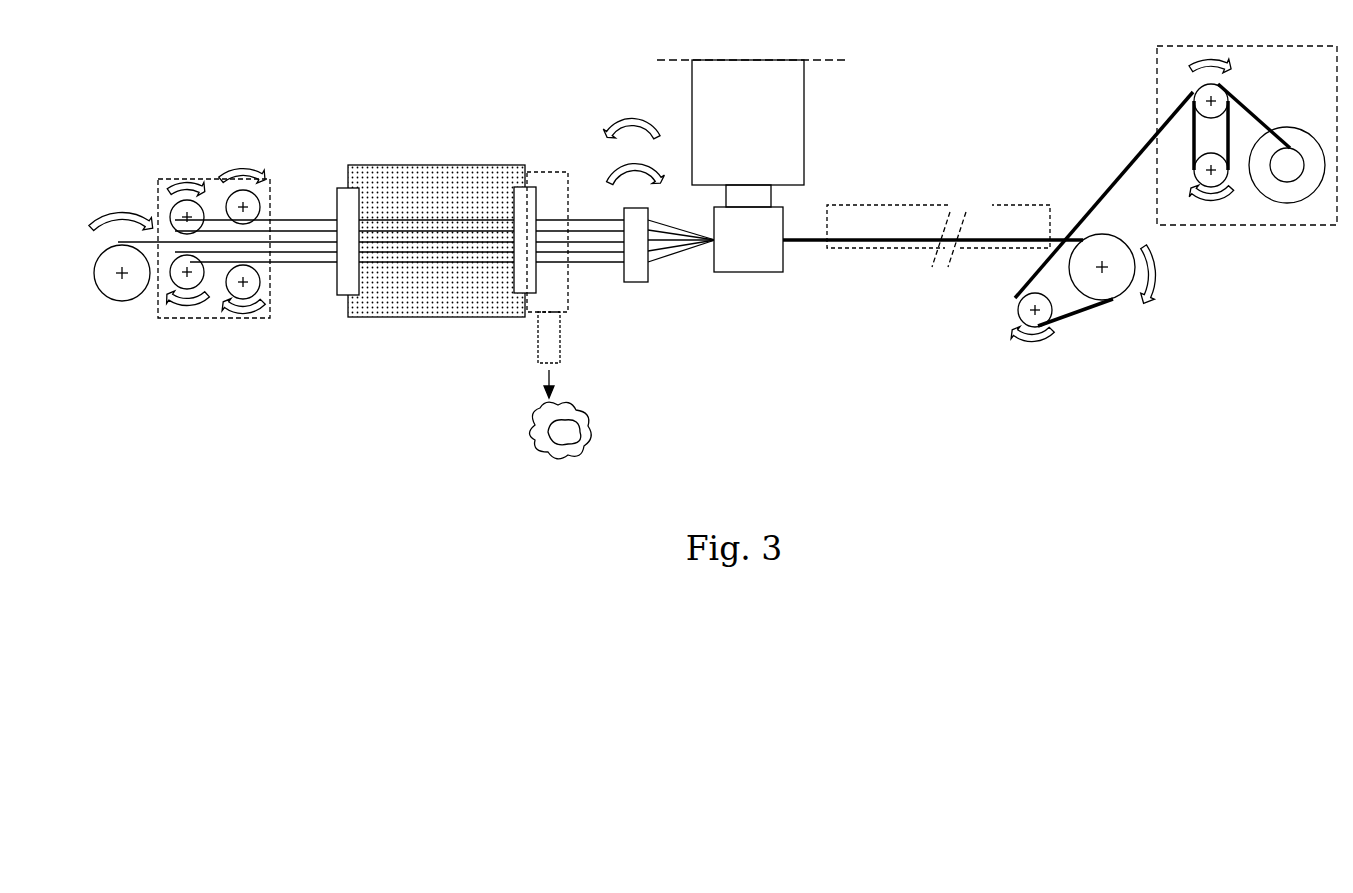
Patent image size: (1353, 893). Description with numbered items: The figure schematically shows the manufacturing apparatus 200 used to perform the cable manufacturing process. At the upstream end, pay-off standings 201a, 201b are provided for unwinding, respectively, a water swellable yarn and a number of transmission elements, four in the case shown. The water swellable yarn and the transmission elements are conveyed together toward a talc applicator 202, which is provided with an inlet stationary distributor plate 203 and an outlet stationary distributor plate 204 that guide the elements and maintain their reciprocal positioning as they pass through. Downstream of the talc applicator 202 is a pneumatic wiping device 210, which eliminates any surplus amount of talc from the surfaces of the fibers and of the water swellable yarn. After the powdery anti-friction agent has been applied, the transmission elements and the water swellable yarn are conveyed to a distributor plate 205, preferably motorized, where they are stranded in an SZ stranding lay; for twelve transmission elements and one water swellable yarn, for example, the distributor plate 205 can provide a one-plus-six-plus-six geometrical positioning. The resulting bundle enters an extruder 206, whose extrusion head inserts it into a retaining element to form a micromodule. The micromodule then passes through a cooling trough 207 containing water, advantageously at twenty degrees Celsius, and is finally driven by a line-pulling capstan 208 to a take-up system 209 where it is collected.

The manufacturing apparatus 200 is at (550, 72).
The pay-off standing 201a is at (115, 280).
The pay-off standing 201b is at (238, 332).
The talc applicator 202 is at (415, 293).
The inlet stationary distributor plate 203 is at (343, 186).
The outlet stationary distributor plate 204 is at (517, 186).
The distributor plate 205 is at (648, 284).
The extruder 206 is at (750, 260).
The cooling trough 207 is at (915, 212).
The line-pulling capstan 208 is at (1103, 325).
The take-up system 209 is at (1238, 252).
The pneumatic wiping device 210 is at (550, 272).